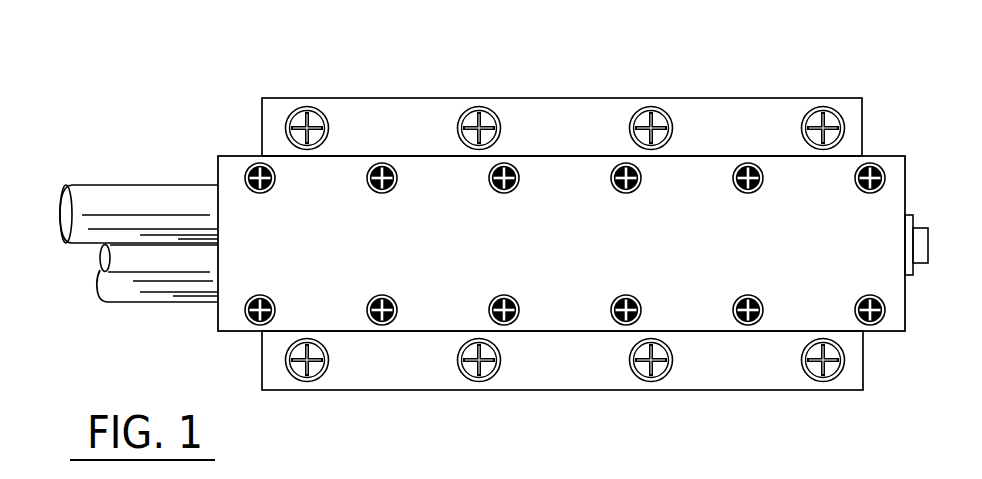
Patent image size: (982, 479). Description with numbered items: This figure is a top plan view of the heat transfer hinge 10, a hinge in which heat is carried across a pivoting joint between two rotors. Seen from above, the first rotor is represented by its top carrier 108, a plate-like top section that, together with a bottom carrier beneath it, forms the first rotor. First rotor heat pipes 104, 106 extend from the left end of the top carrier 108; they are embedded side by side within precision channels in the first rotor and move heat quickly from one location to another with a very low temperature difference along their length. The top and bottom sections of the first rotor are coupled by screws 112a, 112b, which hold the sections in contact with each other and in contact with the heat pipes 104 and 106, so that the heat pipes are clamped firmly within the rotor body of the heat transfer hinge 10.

The heat transfer hinge 10 is at (678, 53).
The first rotor heat pipe 104 is at (169, 266).
The first rotor heat pipe 106 is at (144, 206).
The top carrier 108 is at (352, 250).
The screw 112a is at (858, 300).
The screw 112b is at (858, 190).